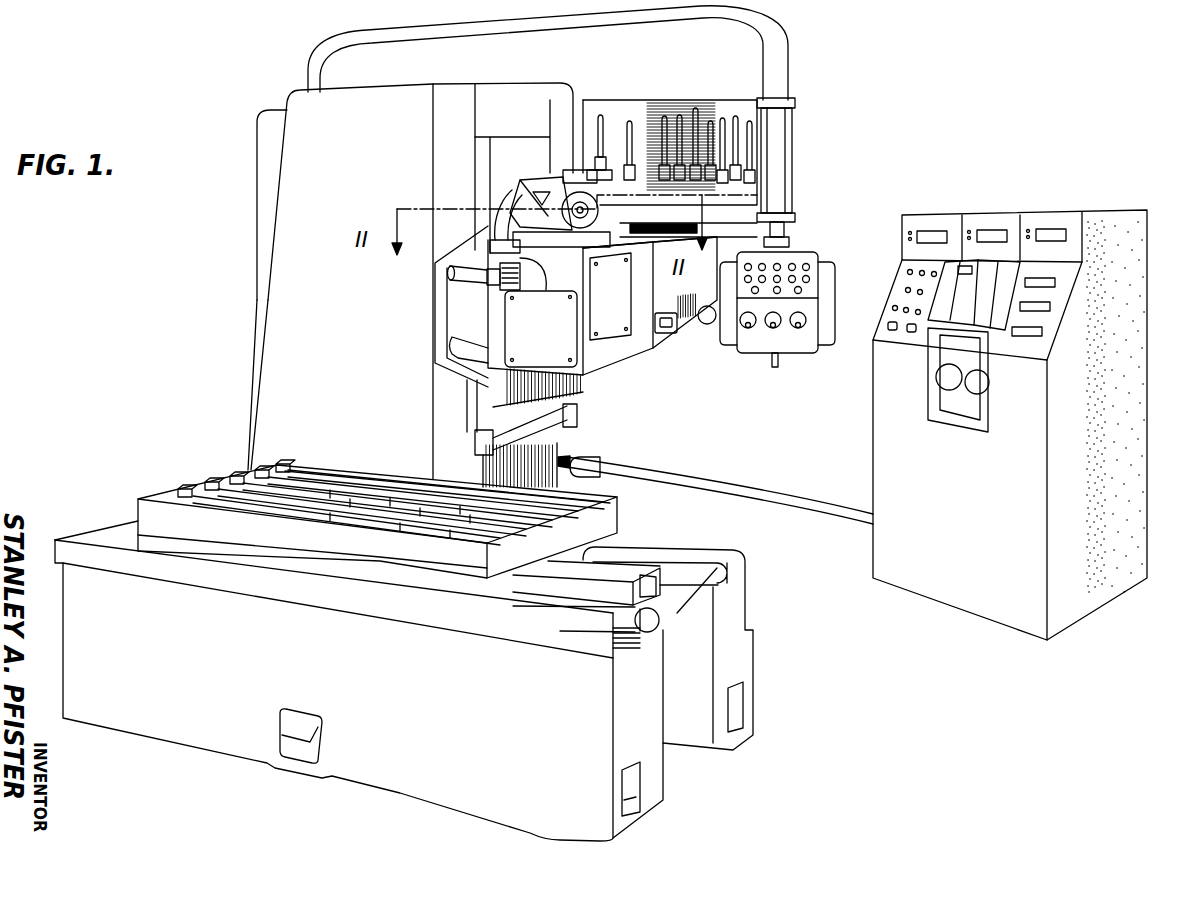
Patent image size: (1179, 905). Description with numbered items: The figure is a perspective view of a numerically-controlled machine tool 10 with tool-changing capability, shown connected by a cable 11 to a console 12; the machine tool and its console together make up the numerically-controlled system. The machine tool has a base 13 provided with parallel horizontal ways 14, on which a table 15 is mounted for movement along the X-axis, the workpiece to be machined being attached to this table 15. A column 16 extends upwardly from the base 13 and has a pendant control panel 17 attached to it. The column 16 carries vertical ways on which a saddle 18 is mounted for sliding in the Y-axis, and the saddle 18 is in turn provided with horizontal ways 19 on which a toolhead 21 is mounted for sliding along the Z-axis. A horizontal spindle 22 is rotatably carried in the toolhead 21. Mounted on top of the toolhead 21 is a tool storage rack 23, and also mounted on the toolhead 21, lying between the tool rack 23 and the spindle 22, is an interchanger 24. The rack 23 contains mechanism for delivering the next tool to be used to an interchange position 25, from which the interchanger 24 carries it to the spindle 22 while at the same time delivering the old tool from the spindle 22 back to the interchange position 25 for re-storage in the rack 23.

The machine tool 10 is at (837, 108).
The cable 11 is at (735, 489).
The console 12 is at (979, 592).
The base 13 is at (722, 738).
The parallel horizontal ways 14 is at (650, 616).
The table 15 is at (218, 488).
The column 16 is at (277, 296).
The pendant control panel 17 is at (812, 251).
The saddle 18 is at (503, 143).
The horizontal ways 19 is at (462, 350).
The toolhead 21 is at (618, 352).
The horizontal spindle 22 is at (543, 268).
The tool storage rack 23 is at (672, 113).
The interchanger 24 is at (545, 185).
The interchange position 25 is at (611, 116).